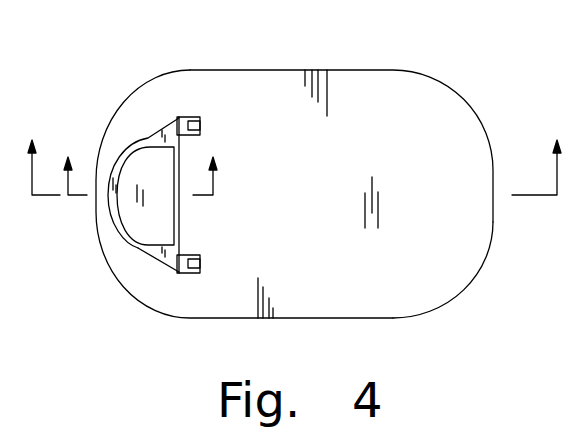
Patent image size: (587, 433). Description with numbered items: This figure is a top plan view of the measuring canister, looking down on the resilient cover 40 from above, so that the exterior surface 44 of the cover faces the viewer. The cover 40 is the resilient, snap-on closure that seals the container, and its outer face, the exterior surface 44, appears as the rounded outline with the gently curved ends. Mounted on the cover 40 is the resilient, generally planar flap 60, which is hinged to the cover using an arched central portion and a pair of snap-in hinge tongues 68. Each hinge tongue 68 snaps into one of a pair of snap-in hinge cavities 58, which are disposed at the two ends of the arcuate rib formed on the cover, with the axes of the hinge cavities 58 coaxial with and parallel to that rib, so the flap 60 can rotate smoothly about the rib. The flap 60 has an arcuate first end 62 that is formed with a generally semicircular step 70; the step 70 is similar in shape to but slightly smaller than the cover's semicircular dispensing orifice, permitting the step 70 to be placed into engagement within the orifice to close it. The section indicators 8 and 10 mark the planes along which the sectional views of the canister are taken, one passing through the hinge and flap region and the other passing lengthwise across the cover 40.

The resilient cover 40 is at (375, 70).
The exterior surface 44 is at (452, 277).
The snap-in hinge cavities 58 is at (180, 118).
The snap-in hinge tongues 68 is at (200, 126).
The flap 60 is at (148, 138).
The arcuate first end 62 is at (120, 228).
The semicircular step 70 is at (138, 248).
The section line 8- 8 is at (141, 165).
The section line 10- 10 is at (296, 156).